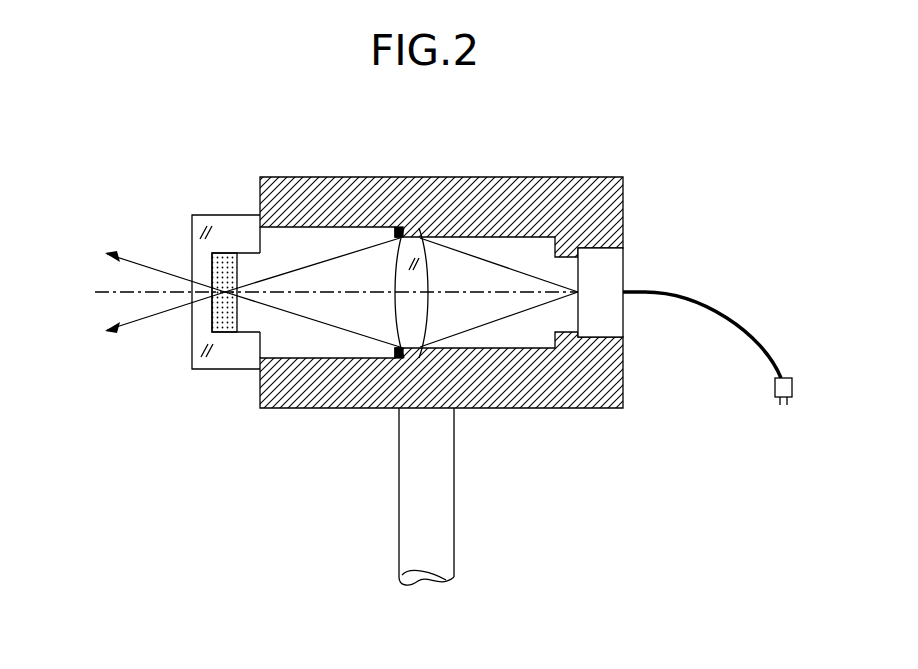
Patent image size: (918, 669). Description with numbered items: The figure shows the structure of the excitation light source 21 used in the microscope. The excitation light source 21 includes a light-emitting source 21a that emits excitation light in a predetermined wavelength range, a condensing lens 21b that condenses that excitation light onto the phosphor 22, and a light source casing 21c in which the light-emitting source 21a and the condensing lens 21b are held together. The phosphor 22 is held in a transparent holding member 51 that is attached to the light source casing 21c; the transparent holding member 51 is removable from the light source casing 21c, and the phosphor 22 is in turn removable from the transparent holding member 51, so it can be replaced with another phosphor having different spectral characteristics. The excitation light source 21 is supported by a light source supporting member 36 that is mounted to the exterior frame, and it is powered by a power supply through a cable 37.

The excitation light source 21 is at (475, 146).
The light-emitting source 21a is at (623, 262).
The condensing lens 21b is at (437, 237).
The light source casing 21c is at (372, 177).
The phosphor 22 is at (222, 252).
The transparent holding member 51 is at (207, 370).
The light source supporting member 36 is at (457, 461).
The cable 37 is at (743, 313).